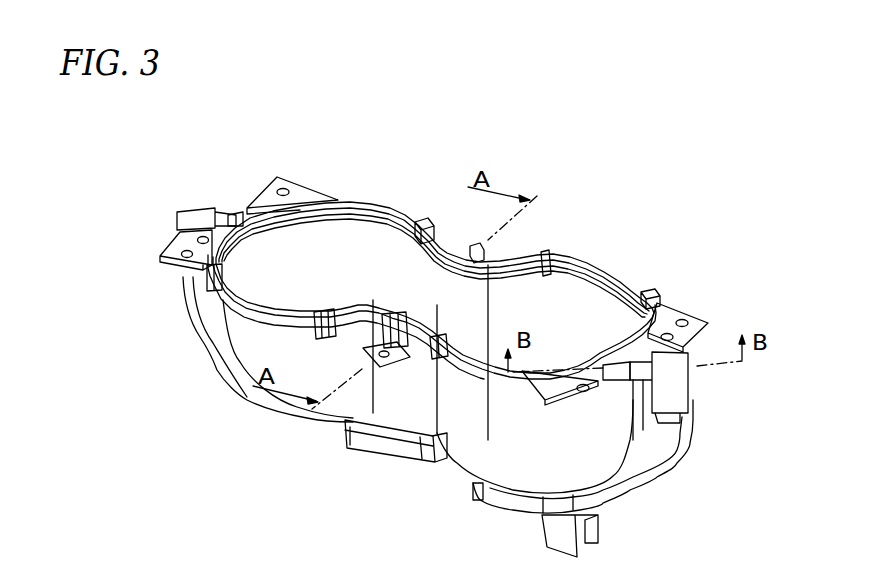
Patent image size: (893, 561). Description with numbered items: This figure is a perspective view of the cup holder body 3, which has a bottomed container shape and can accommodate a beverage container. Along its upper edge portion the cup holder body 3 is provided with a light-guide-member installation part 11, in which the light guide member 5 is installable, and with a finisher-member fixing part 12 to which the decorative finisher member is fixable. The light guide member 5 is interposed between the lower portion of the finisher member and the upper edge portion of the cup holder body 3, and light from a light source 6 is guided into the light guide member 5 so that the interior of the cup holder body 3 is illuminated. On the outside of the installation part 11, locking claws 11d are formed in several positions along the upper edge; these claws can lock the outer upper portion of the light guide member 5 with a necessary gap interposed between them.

The cup holder body 3 is at (434, 367).
The light guide member 5 is at (383, 235).
The light source 6 is at (181, 212).
The light-guide-member installation part 11 is at (488, 258).
The locking claws 11d is at (432, 222).
The finisher-member fixing part 12 is at (410, 358).